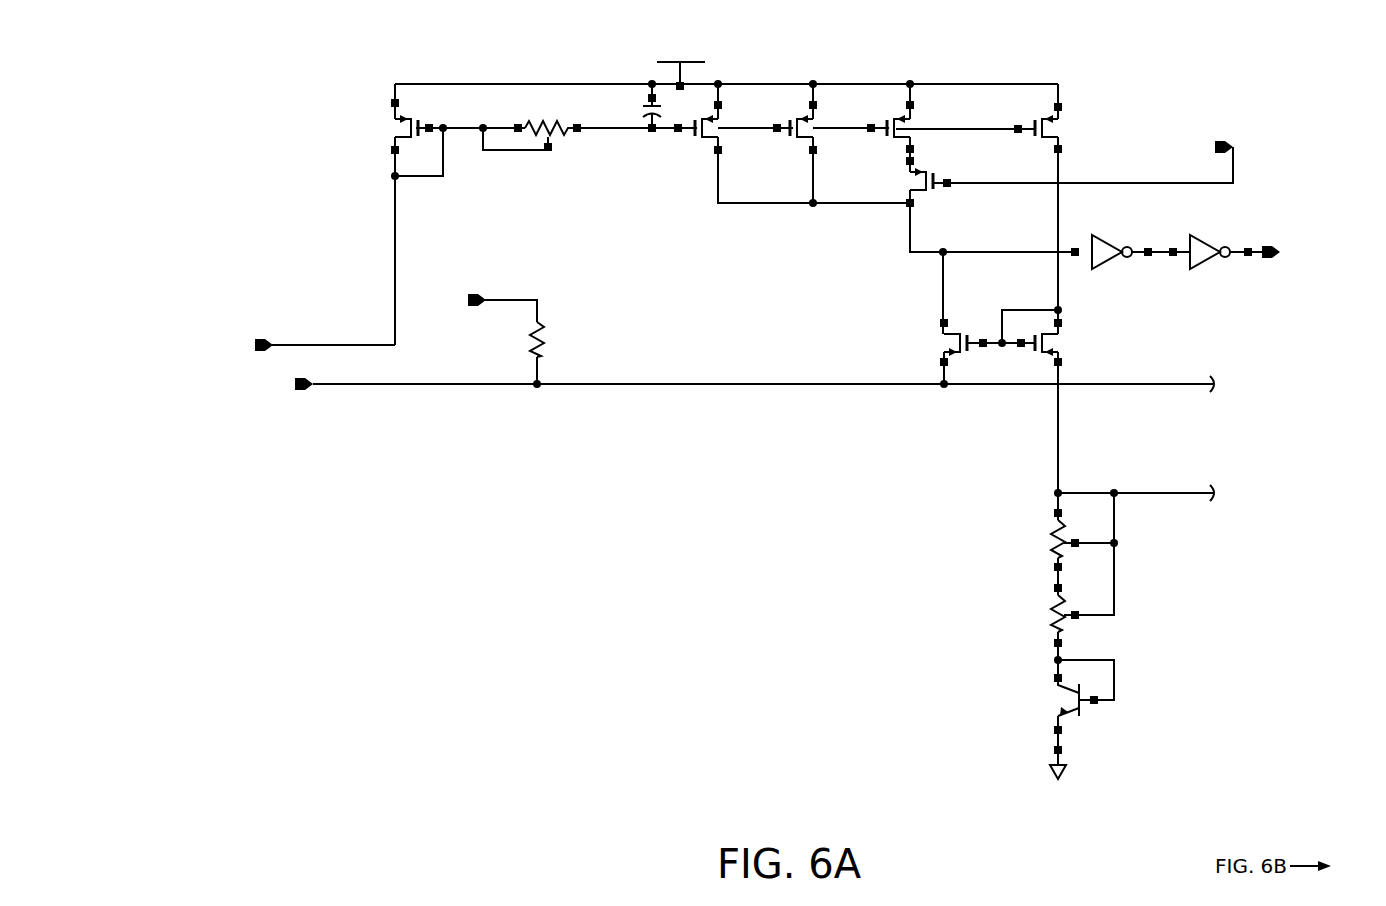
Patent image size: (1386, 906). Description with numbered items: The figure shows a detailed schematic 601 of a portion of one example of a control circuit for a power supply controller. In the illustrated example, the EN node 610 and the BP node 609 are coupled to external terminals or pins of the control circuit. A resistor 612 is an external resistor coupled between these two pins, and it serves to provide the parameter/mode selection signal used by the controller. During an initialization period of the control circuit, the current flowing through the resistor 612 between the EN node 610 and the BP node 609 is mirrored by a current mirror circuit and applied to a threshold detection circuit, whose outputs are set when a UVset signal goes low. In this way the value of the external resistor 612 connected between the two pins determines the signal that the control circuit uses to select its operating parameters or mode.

The detailed schematic 601 is at (642, 807).
The BP node 609 is at (472, 287).
The EN node 610 is at (273, 398).
The resistor 612 is at (548, 331).